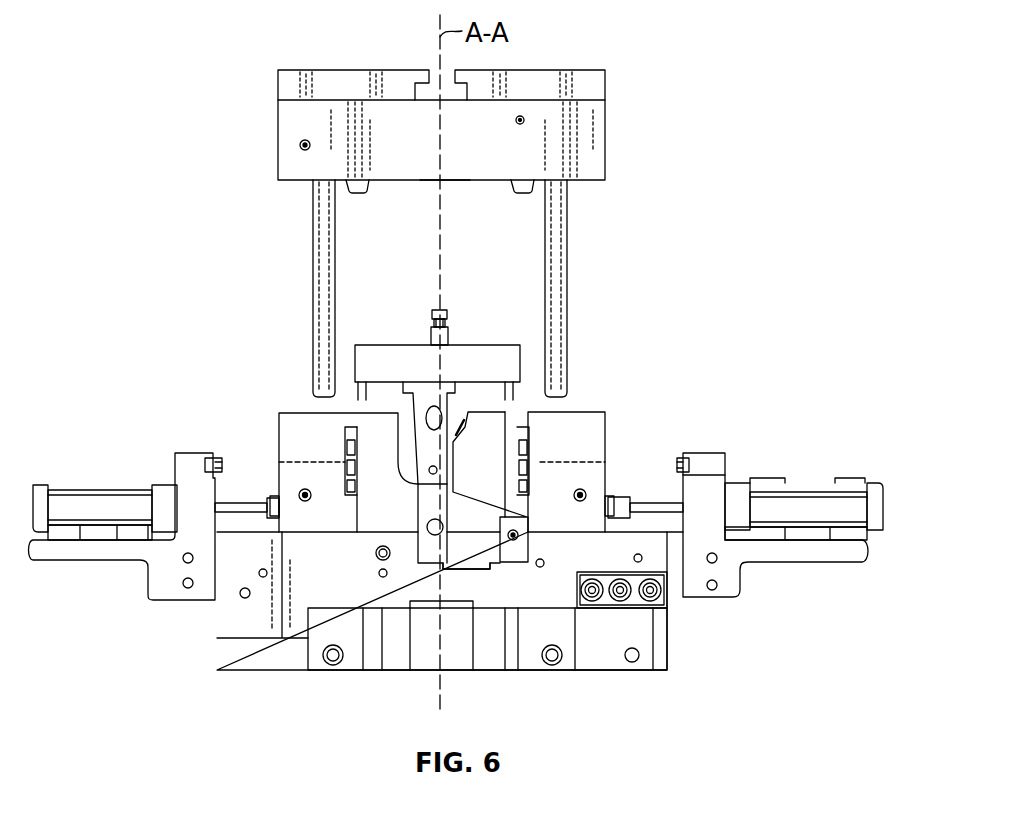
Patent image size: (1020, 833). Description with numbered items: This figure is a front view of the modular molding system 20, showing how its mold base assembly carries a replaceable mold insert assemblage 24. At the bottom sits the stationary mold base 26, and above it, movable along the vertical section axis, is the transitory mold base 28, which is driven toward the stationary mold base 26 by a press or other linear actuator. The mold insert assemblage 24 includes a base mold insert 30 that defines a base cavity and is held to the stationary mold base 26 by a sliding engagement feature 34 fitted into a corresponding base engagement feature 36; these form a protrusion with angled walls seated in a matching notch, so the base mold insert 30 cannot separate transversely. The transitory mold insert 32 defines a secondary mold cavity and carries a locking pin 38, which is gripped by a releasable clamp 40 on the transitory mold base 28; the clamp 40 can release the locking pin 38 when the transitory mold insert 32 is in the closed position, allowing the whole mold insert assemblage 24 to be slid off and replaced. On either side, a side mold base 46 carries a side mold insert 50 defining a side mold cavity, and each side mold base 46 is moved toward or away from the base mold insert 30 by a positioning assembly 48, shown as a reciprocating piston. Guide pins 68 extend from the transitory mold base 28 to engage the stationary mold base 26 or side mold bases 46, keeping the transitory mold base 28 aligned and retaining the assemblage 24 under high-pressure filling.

The modular molding system 20 is at (690, 188).
The mold insert assemblage 24 is at (435, 415).
The stationary mold base 26 is at (228, 670).
The transitory mold base 28 is at (605, 142).
The base mold insert 30 is at (521, 565).
The transitory mold insert 32 is at (413, 345).
The sliding engagement feature 34 is at (468, 565).
The base engagement feature 36 is at (441, 571).
The locking pin 38 is at (437, 310).
The releasable clamp 40 is at (452, 182).
The side mold base 46 is at (281, 446).
The positioning assembly 48 is at (100, 485).
The side mold insert 50 is at (365, 438).
The guide pin 68 is at (313, 290).